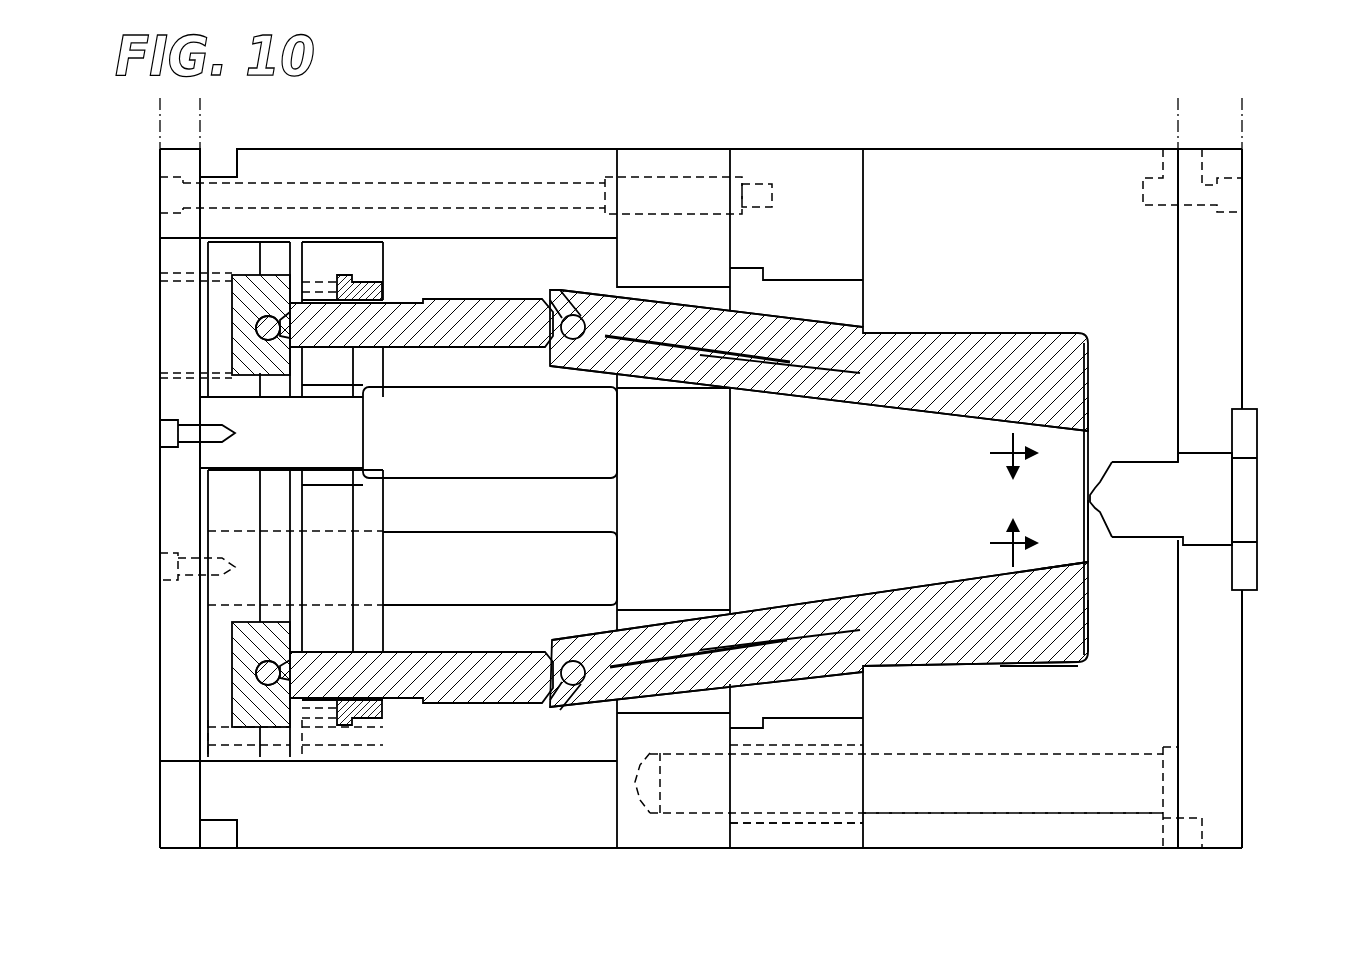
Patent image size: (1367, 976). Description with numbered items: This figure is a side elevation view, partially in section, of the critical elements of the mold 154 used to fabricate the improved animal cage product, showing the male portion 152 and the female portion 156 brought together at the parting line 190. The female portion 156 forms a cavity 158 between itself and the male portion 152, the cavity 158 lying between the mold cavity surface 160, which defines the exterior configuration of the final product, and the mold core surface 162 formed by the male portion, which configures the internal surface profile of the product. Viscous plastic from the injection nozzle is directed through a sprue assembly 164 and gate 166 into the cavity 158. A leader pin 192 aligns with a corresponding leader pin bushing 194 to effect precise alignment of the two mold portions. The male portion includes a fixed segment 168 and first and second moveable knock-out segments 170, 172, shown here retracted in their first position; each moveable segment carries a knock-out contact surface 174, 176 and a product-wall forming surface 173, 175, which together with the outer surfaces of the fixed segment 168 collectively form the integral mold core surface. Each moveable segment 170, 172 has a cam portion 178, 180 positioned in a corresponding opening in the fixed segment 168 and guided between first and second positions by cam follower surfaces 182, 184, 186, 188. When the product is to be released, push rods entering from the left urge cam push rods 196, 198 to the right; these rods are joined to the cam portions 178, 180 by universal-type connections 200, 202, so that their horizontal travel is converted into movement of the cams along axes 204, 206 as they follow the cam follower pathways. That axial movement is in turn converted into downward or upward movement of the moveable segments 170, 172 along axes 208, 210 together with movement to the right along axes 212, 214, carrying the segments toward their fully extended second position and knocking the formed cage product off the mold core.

The male portion 152 is at (1090, 448).
The mold 154 is at (1070, 110).
The female portion 156 is at (1095, 852).
The cavity 158 is at (1090, 388).
The mold cavity surface 160 is at (1020, 670).
The mold core surface 162 is at (1057, 670).
The sprue assembly 164 is at (1187, 515).
The gate 166 is at (1095, 522).
The fixed segment 168 is at (1067, 552).
The first moveable knock-out segment 170 is at (895, 365).
The second moveable knock-out segment 172 is at (980, 630).
The product-wall forming surface 173 is at (990, 336).
The knock-out contact surface 174 is at (1090, 413).
The product-wall forming surface 175 is at (935, 668).
The knock-out contact surface 176 is at (1092, 625).
The cam portion 178 is at (775, 375).
The cam portion 180 is at (752, 630).
The cam follower surface 182 is at (803, 322).
The cam follower surface 184 is at (833, 404).
The cam follower surface 186 is at (762, 682).
The cam follower surface 188 is at (808, 607).
The parting line 190 is at (863, 150).
The leader pin 192 is at (882, 820).
The leader pin bushing 194 is at (807, 828).
The cam push rod 196 is at (497, 305).
The cam push rod 198 is at (510, 700).
The universal-type connection 200 is at (576, 310).
The universal-type connection 202 is at (576, 688).
The cam axis 204 is at (683, 347).
The cam axis 206 is at (665, 655).
The axis of downward or upward movement 208 is at (1002, 452).
The axis of downward or upward movement 210 is at (1010, 553).
The axis of rightward movement 212 is at (1000, 456).
The axis of rightward movement 214 is at (1000, 542).